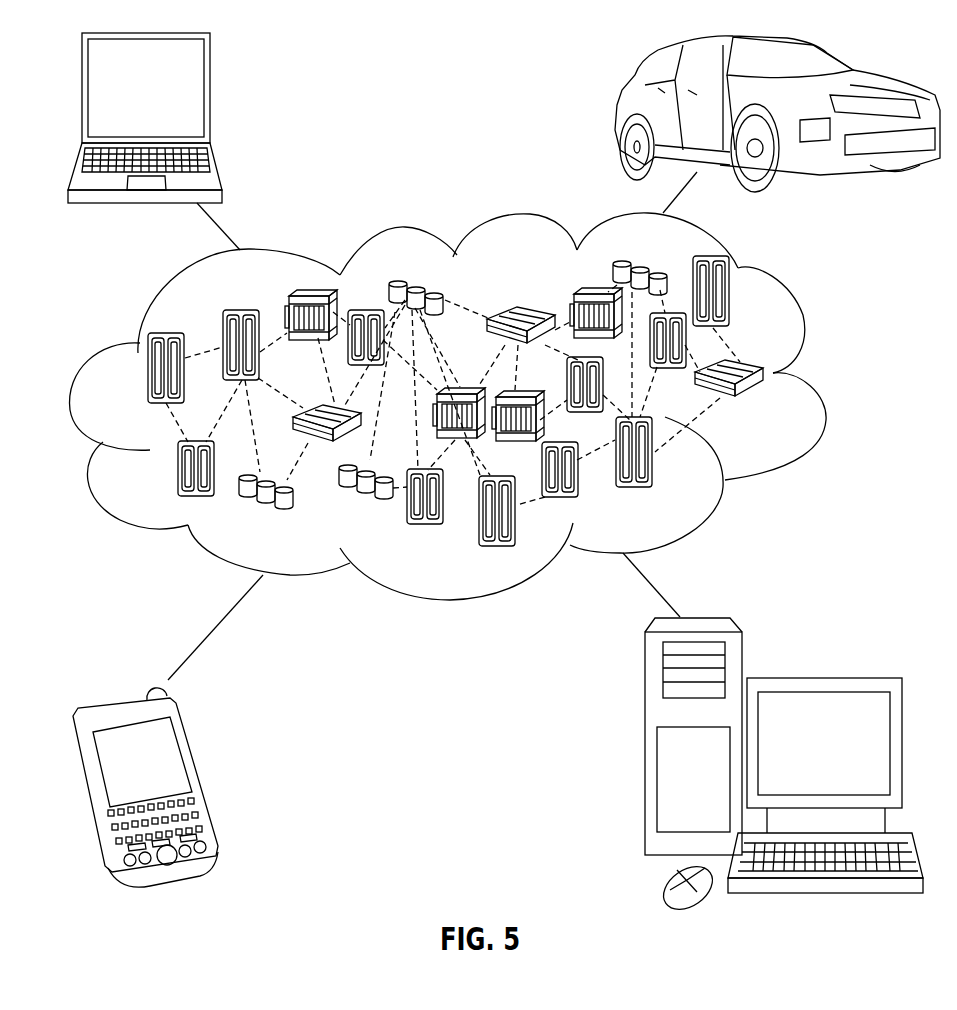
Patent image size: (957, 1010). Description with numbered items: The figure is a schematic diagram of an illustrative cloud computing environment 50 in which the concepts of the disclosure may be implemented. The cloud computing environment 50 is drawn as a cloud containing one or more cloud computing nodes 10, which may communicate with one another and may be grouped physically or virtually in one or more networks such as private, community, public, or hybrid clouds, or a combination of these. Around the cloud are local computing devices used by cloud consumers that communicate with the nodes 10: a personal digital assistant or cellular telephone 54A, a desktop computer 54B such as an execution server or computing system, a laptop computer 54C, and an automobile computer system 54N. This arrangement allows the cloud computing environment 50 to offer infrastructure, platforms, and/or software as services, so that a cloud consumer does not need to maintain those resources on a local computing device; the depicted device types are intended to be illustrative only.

The cloud computing nodes 10 is at (780, 418).
The cloud computing environment 50 is at (820, 378).
The personal digital assistant or cellular telephone 54A is at (197, 772).
The desktop computer 54B is at (822, 678).
The laptop computer 54C is at (210, 96).
The automobile computer system 54N is at (618, 112).